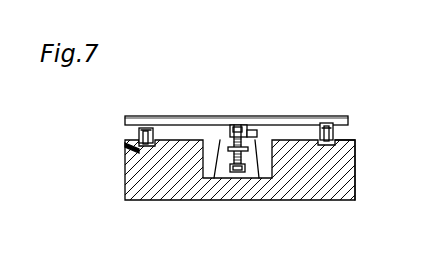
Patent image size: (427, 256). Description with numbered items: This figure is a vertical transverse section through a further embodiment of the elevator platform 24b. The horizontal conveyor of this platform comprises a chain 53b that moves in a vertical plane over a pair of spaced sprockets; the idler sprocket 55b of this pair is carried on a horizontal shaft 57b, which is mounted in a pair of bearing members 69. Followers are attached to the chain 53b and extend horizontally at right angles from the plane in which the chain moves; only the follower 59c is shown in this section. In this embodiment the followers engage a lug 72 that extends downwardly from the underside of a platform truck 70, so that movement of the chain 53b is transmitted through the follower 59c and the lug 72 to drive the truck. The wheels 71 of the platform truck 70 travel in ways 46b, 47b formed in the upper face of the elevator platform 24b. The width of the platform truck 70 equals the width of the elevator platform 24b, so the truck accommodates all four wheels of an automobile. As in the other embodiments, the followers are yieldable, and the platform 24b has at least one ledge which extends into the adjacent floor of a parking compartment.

The elevator platform 24b is at (167, 181).
The way 46b is at (128, 150).
The way 47b is at (336, 165).
The chain 53b is at (238, 124).
The idler sprocket 55b is at (232, 124).
The horizontal shaft 57b is at (256, 153).
The follower 59c is at (245, 124).
The bearing member 69 is at (231, 168).
The platform truck 70 is at (339, 115).
The wheel 71 is at (334, 131).
The lug 72 is at (253, 124).